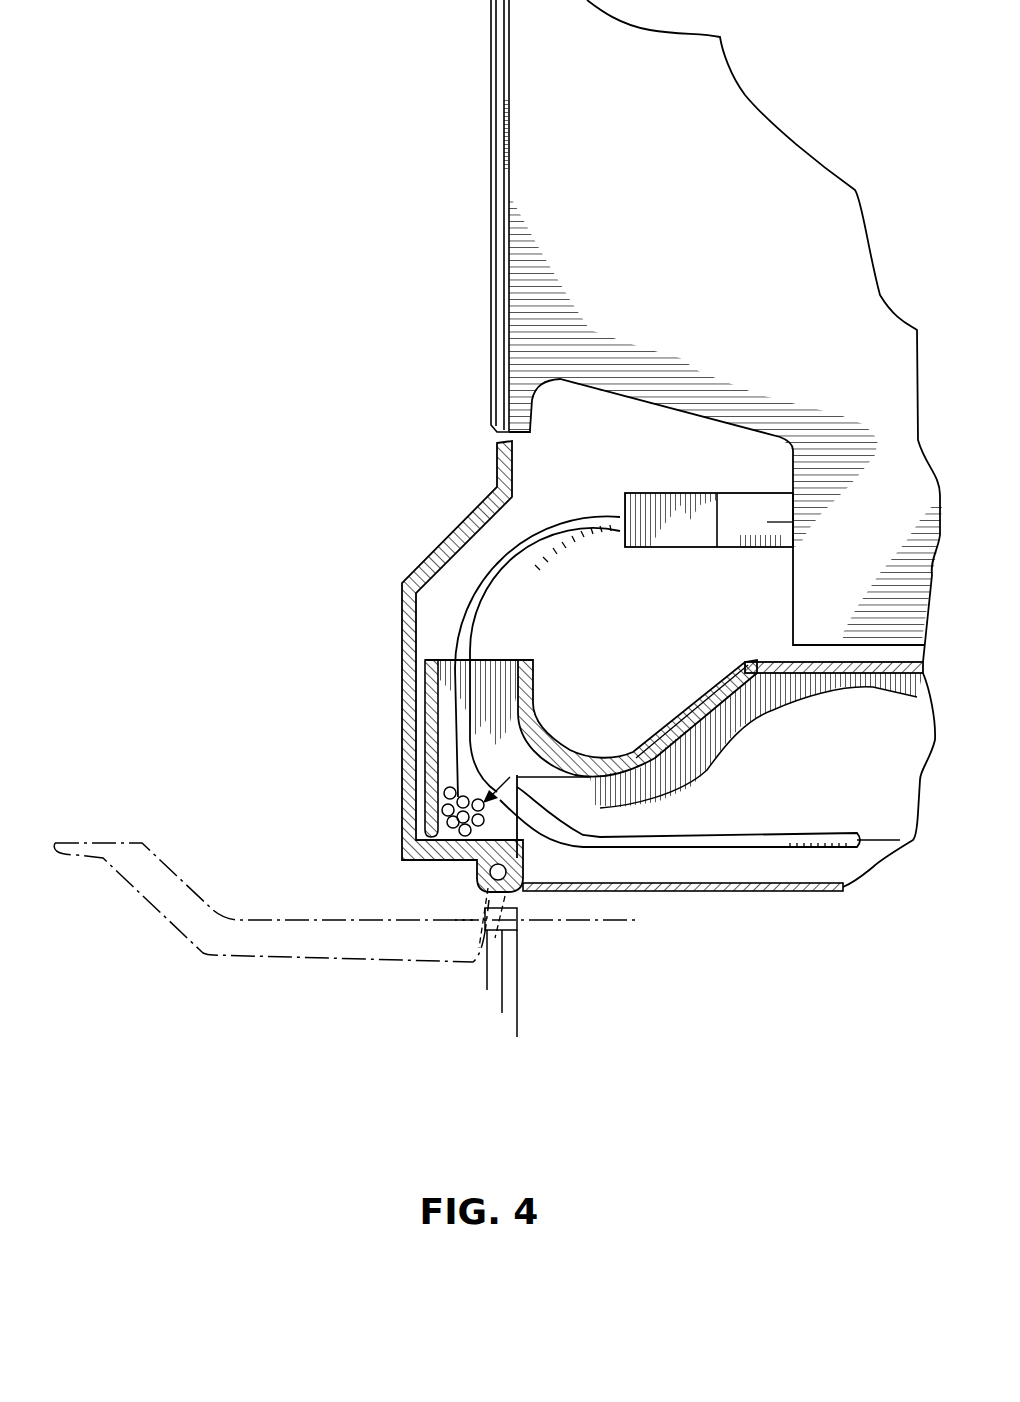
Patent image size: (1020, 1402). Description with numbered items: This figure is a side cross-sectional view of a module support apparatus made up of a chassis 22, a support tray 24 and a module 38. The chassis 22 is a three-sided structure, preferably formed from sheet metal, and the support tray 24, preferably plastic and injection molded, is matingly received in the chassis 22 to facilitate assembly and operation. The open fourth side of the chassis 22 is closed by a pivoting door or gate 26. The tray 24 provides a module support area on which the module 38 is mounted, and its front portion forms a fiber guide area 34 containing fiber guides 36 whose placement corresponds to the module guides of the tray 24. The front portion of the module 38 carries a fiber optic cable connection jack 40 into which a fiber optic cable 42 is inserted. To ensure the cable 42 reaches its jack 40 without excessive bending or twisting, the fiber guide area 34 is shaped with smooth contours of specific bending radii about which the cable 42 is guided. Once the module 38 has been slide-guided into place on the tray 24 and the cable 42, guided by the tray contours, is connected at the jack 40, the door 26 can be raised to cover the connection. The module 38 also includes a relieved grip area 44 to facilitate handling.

The chassis 22 is at (690, 903).
The support tray 24 is at (852, 677).
The pivoting door 26 is at (412, 563).
The fiber guide area 34 is at (577, 750).
The fiber guides 36 is at (498, 673).
The module 38 is at (678, 219).
The fiber optic cable connection jack 40 is at (697, 520).
The fiber optic cable 42 is at (596, 826).
The relieved grip area 44 is at (543, 376).